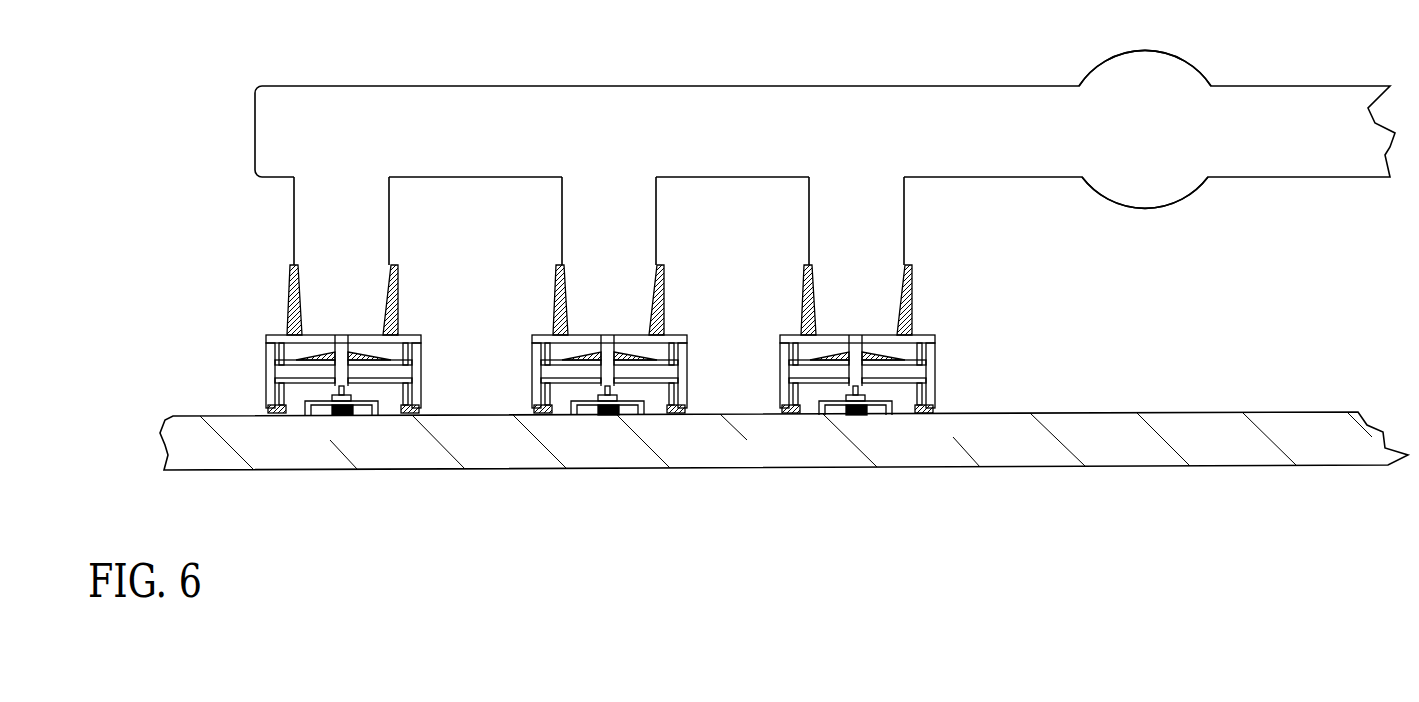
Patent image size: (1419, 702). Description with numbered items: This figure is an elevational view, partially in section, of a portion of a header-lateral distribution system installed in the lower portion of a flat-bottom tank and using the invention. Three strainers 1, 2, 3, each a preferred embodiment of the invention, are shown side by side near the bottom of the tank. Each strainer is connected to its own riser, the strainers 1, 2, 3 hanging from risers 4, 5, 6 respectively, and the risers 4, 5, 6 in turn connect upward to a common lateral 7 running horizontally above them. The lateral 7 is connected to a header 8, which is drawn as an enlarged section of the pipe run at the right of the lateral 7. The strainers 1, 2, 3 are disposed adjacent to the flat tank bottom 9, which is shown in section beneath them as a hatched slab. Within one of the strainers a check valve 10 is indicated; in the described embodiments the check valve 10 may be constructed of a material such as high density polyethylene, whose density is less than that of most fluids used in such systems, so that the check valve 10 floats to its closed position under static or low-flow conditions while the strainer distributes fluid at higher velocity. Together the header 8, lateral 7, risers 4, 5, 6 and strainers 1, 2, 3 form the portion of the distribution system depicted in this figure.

The strainer 1 is at (289, 318).
The strainer 2 is at (555, 302).
The strainer 3 is at (803, 293).
The riser 4 is at (294, 232).
The riser 5 is at (562, 217).
The riser 6 is at (904, 240).
The lateral 7 is at (908, 85).
The header 8 is at (1168, 52).
The flat tank bottom 9 is at (633, 468).
The check valve 10 is at (883, 353).